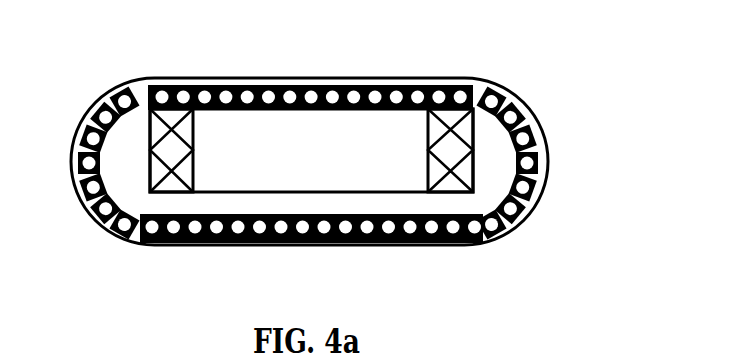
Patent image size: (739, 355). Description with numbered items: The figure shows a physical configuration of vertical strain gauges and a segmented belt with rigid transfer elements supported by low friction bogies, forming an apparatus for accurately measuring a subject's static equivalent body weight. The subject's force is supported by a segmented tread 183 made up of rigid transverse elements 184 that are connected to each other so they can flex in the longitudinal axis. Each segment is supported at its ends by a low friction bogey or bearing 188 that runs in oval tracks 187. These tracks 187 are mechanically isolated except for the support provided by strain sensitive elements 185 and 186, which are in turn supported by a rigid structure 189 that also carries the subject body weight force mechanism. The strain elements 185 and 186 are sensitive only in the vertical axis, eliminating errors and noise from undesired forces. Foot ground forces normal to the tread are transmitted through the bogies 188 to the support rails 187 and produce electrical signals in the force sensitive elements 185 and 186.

The segmented tread 183 is at (349, 156).
The rigid transverse elements 184 is at (318, 79).
The strain sensitive element 185 is at (196, 136).
The strain sensitive element 186 is at (427, 134).
The oval tracks 187 is at (548, 181).
The low friction bogey 188 is at (324, 234).
The rigid structure 189 is at (290, 189).